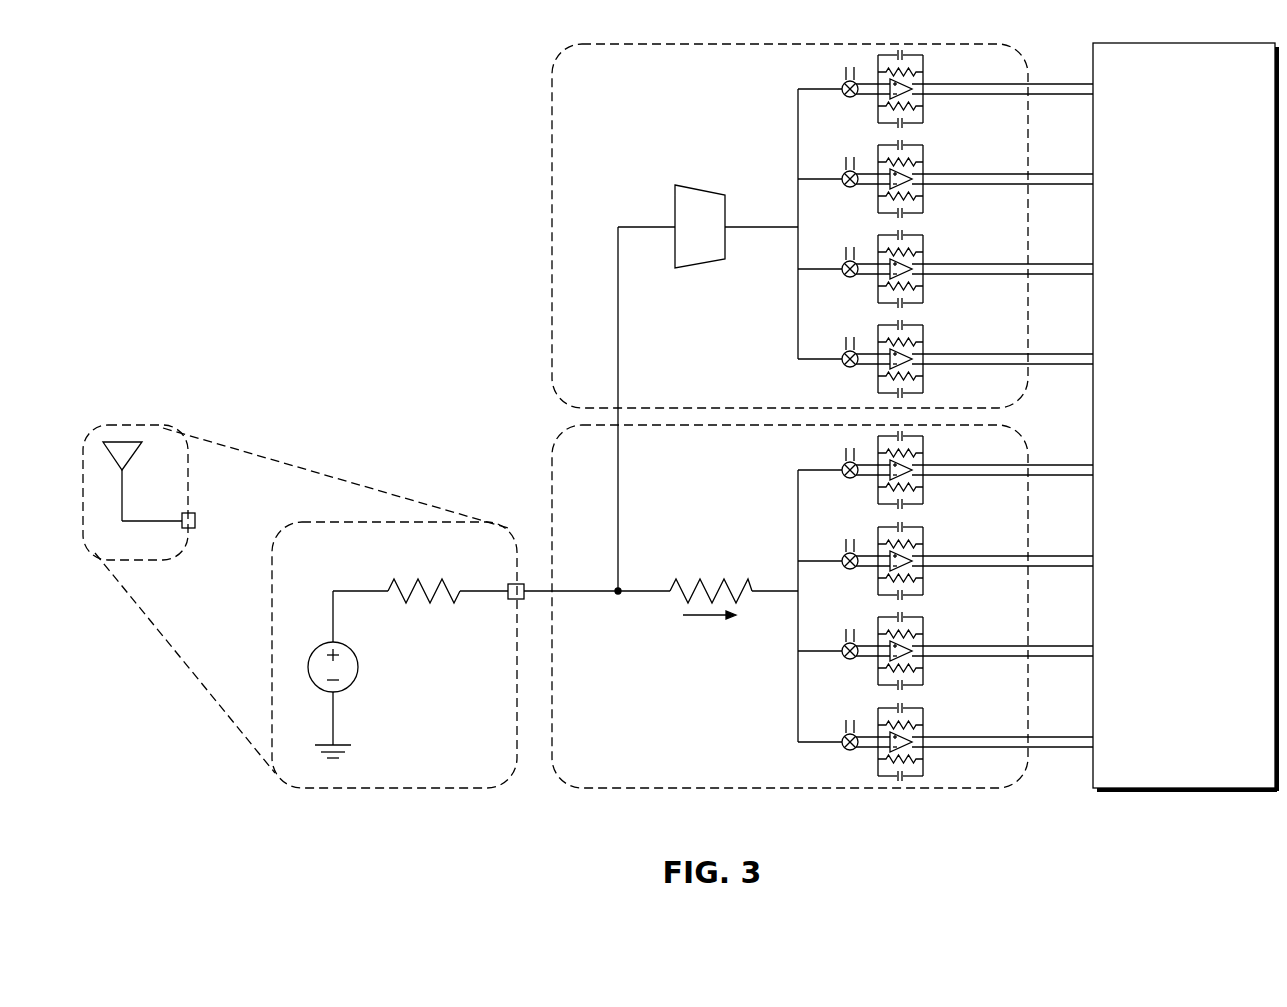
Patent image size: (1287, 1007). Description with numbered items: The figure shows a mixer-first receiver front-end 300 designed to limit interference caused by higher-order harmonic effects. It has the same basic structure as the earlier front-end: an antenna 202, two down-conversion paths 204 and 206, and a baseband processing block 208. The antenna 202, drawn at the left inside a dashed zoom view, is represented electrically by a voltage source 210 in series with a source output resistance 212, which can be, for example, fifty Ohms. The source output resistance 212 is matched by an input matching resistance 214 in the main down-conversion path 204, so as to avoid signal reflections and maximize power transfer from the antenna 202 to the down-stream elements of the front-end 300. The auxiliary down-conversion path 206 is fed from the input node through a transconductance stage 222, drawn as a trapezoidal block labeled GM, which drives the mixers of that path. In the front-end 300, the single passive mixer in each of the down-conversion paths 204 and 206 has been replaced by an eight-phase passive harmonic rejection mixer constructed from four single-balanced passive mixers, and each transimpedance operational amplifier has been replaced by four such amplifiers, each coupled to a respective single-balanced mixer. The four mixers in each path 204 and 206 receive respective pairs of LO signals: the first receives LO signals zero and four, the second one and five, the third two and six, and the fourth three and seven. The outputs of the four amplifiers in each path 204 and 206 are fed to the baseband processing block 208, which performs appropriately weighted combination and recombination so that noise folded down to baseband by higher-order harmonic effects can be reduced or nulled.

The mixer-first receiver front-end 300 is at (275, 183).
The antenna 202 is at (133, 458).
The down-conversion path 204 is at (716, 593).
The down-conversion path 206 is at (716, 317).
The baseband processing block 208 is at (1185, 417).
The voltage source 210 is at (360, 667).
The source output resistance 212 is at (420, 570).
The input matching resistance 214 is at (734, 570).
The transconductance amplifier GM 222 is at (656, 205).